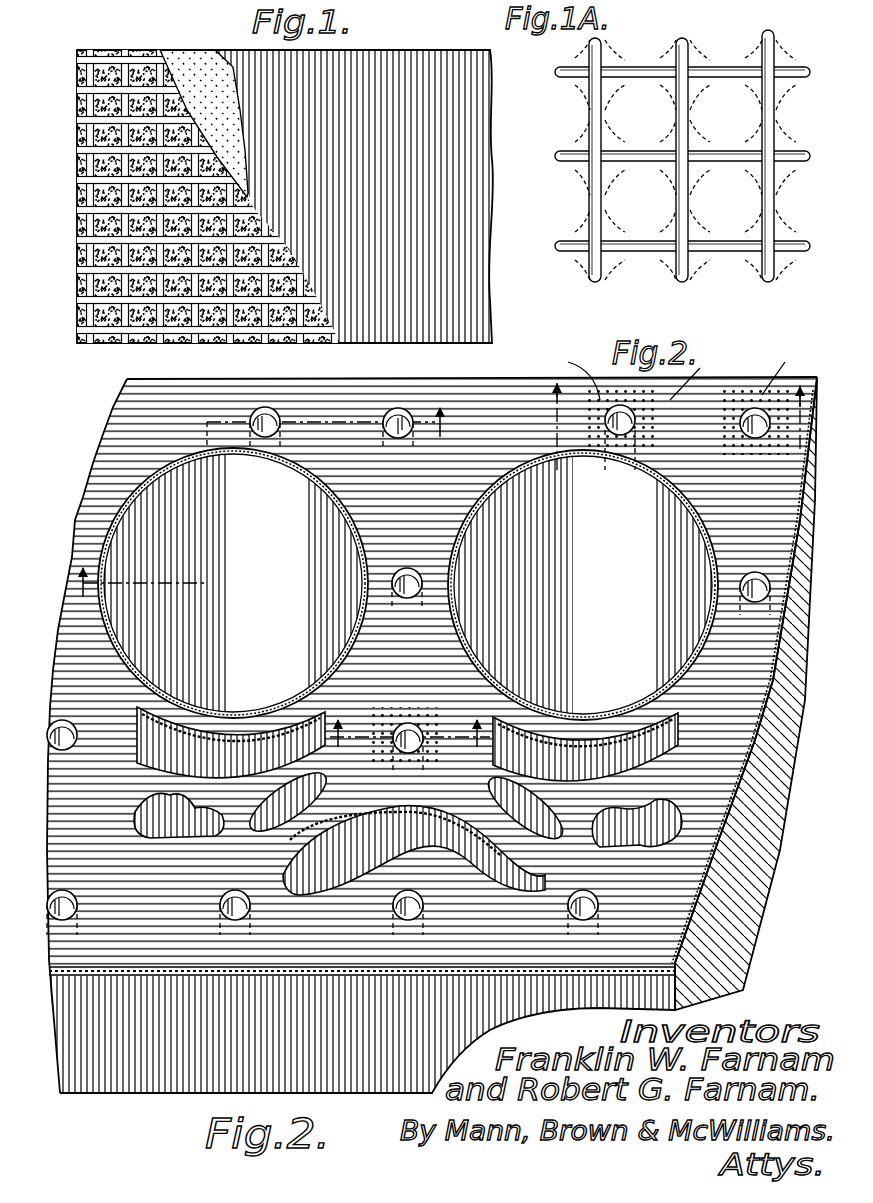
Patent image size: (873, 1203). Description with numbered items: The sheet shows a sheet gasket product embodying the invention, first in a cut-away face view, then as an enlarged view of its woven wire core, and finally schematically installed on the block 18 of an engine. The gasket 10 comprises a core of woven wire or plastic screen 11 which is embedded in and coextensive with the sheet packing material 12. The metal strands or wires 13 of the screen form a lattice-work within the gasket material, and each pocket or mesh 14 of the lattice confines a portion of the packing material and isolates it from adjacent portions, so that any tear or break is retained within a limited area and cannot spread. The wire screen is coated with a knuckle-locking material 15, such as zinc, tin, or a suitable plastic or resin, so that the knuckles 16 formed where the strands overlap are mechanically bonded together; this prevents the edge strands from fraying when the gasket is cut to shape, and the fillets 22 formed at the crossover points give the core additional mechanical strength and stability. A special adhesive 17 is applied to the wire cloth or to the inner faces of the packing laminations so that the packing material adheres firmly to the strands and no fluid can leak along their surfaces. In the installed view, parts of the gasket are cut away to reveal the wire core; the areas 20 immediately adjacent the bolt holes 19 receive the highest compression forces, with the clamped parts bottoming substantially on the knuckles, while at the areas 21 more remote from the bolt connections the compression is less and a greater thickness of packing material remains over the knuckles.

In FIG. 1, the gasket 10 is at (372, 70).
In FIG. 1, the woven wire screen core 11 is at (201, 192).
In FIG. 1, the sheet packing material 12 is at (388, 320).
In FIG. 2, the sheet packing material 12 is at (485, 445).
In FIG. 1, the wire strands 13 is at (270, 318).
In FIG. 1A, the wire strands 13 is at (590, 105).
In FIG. 1, the mesh pocket 14 is at (215, 312).
In FIG. 1A, the mesh pocket 14 is at (658, 215).
In FIG. 1, the knuckle-locking coating material 15 is at (140, 72).
In FIG. 1A, the knuckle-locking coating material 15 is at (674, 86).
In FIG. 1, the knuckles 16 is at (125, 113).
In FIG. 1A, the knuckles 16 is at (798, 80).
In FIG. 1, the adhesive 17 is at (172, 62).
In FIG. 1A, the adhesive 17 is at (725, 220).
In FIG. 2, the engine block 18 is at (150, 1065).
In FIG. 2, the bolt holes 19 is at (280, 408).
In FIG. 2, the areas adjacent bolt holes 20 is at (585, 428).
In FIG. 2, the areas remote from bolt connections 21 is at (705, 410).
In FIG. 1, the fillets 22 is at (128, 205).
In FIG. 1A, the fillets 22 is at (762, 140).